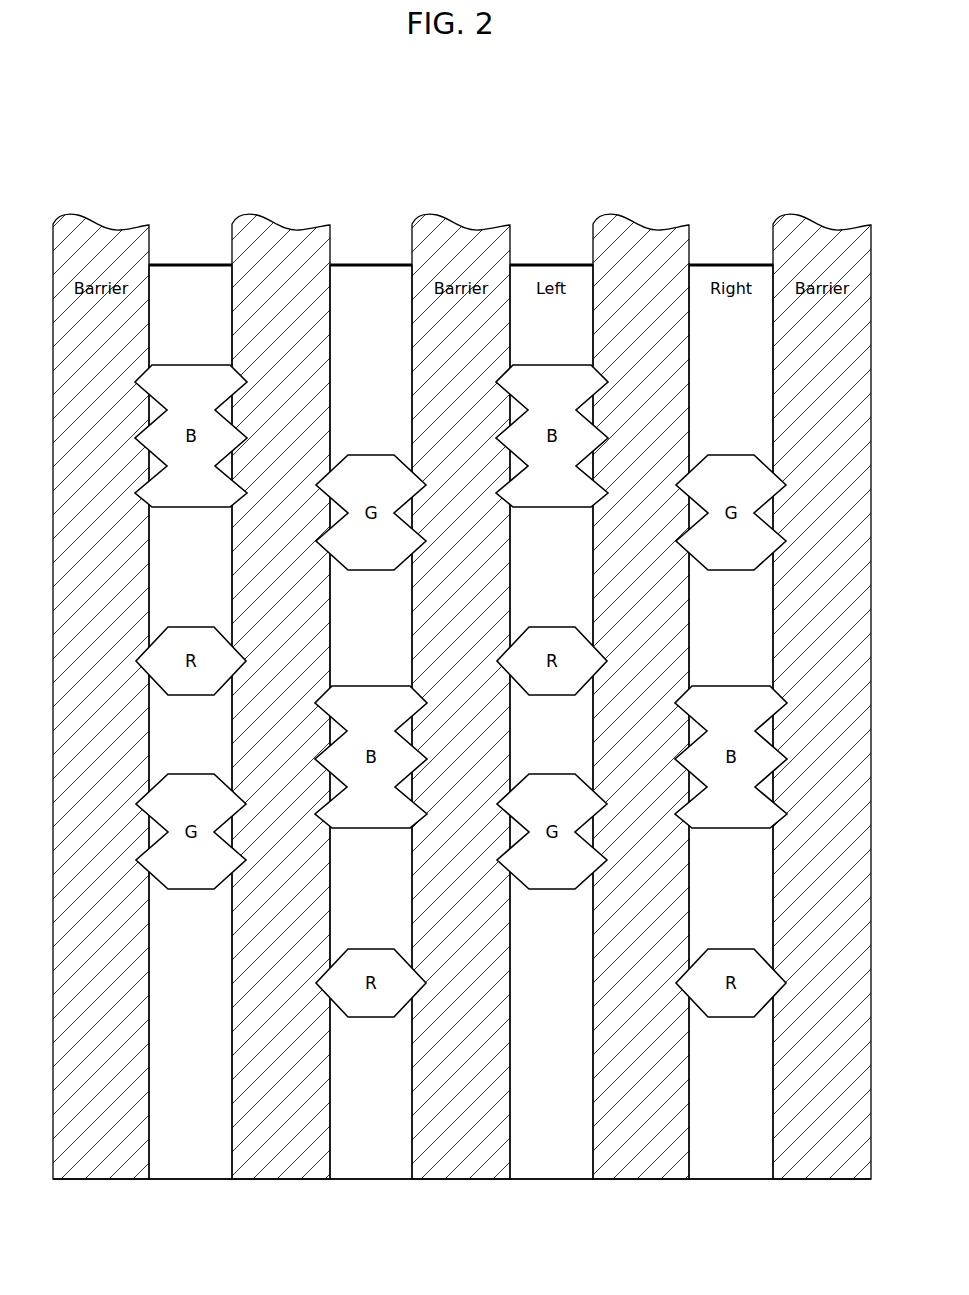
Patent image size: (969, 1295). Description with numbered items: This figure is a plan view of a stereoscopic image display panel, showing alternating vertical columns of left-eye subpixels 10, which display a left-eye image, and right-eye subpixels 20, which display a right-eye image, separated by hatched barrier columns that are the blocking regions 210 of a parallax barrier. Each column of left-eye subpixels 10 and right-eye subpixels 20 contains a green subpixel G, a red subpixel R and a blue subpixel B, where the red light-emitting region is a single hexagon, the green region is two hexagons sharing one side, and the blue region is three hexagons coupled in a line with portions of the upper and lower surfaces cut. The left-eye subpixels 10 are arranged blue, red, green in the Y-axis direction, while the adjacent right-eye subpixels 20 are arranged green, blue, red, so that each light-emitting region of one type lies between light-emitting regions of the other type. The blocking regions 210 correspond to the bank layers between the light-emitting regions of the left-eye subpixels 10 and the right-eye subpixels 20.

The left-eye subpixels 10 is at (196, 212).
The right-eye subpixels 20 is at (378, 206).
The blocking regions 210 is at (284, 247).